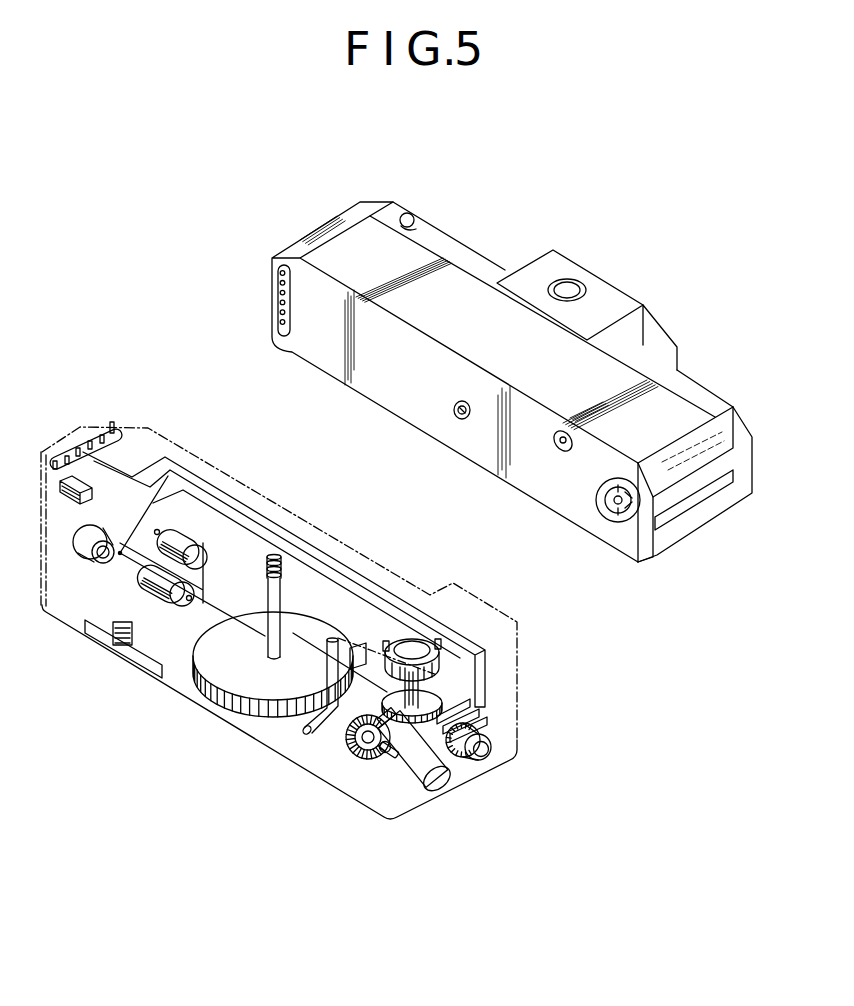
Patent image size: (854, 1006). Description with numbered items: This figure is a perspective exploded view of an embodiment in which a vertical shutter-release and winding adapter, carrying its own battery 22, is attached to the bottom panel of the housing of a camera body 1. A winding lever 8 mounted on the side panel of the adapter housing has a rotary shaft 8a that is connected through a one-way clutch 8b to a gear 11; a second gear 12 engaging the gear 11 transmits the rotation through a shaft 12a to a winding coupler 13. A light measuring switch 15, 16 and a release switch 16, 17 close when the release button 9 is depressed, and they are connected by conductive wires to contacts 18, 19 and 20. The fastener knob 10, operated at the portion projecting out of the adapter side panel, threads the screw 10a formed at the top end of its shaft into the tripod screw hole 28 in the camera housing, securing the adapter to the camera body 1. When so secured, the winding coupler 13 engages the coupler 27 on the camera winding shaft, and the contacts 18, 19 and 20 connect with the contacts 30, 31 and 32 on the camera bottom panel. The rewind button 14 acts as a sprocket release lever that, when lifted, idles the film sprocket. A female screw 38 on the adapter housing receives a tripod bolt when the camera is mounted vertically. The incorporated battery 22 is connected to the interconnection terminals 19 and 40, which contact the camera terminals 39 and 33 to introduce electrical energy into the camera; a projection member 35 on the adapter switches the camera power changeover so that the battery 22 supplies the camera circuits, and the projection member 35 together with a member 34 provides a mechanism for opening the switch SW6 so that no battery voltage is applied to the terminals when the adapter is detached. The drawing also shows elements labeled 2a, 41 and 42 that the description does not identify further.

The camera body 1 is at (484, 300).
The printed circuit board 2a is at (480, 608).
The winding lever 8 is at (419, 798).
The rotary shaft 8a is at (391, 754).
The one-way clutch 8b is at (381, 754).
The release button 9 is at (484, 758).
The fastener knob 10 is at (236, 680).
The screw 10a is at (275, 552).
The gear 11 is at (354, 757).
The gear 12 is at (427, 709).
The shaft 12a is at (398, 668).
The winding coupler 13 is at (408, 638).
The rewind button 14 is at (306, 734).
The light measuring switch 15 is at (486, 719).
The switch contact 16 is at (479, 711).
The release switch 17 is at (470, 703).
The contact 18 is at (92, 443).
The contact 19 is at (55, 462).
The contact 20 is at (79, 450).
The battery 22 is at (157, 580).
The winding coupler 27 is at (596, 500).
The tripod screw hole 28 is at (453, 406).
The contact 30 is at (280, 312).
The contact 31 is at (280, 302).
The contact 32 is at (280, 292).
The terminal 33 is at (280, 272).
The member 34 is at (280, 282).
The projection member 35 is at (114, 426).
The female screw 38 is at (91, 559).
The terminal 39 is at (280, 322).
The interconnection terminal 40 is at (106, 449).
The connector socket 41 is at (284, 337).
The terminal pin 42 is at (67, 457).
The switch SW6 is at (72, 494).